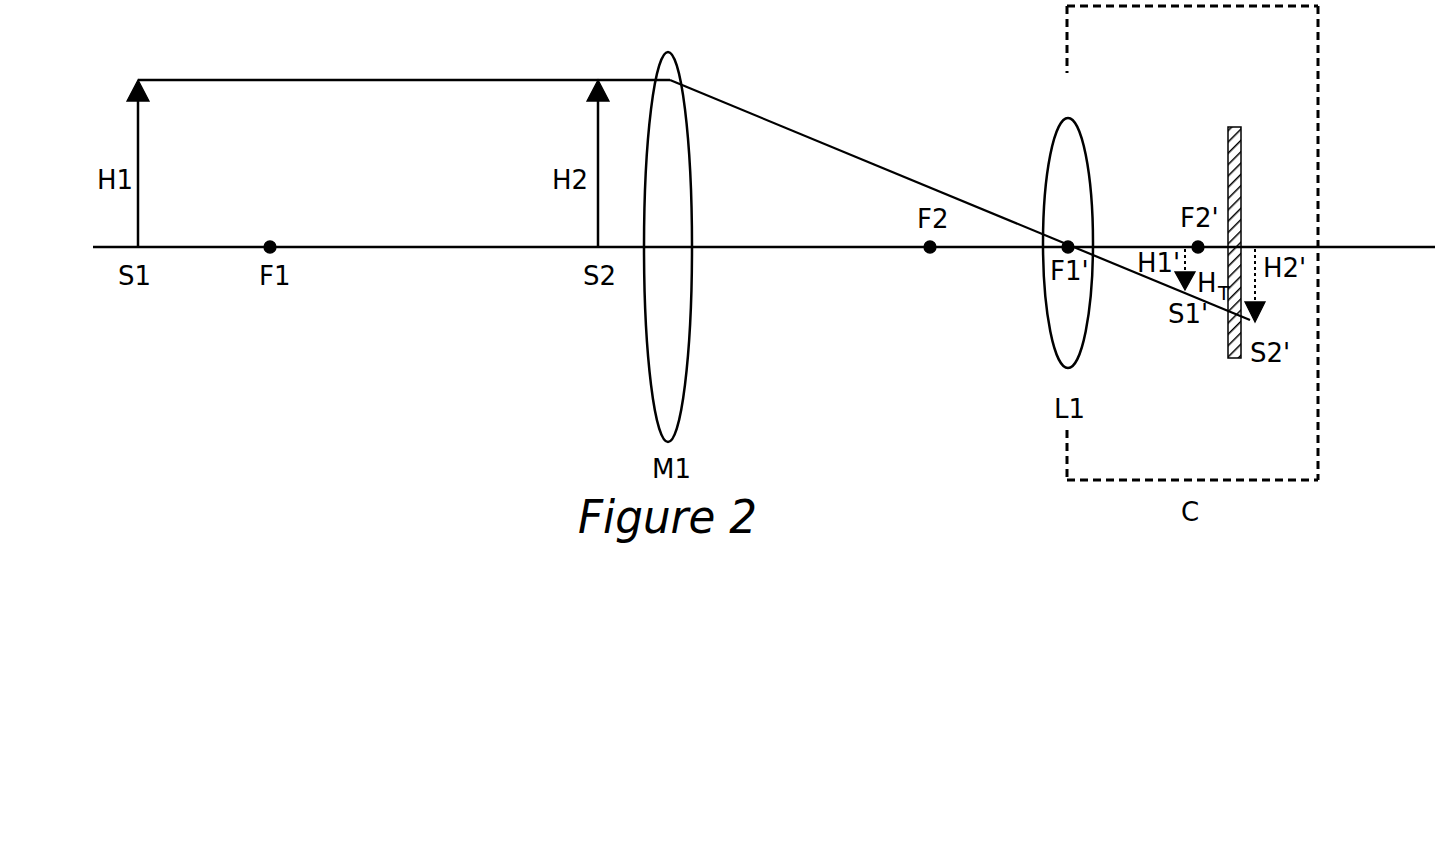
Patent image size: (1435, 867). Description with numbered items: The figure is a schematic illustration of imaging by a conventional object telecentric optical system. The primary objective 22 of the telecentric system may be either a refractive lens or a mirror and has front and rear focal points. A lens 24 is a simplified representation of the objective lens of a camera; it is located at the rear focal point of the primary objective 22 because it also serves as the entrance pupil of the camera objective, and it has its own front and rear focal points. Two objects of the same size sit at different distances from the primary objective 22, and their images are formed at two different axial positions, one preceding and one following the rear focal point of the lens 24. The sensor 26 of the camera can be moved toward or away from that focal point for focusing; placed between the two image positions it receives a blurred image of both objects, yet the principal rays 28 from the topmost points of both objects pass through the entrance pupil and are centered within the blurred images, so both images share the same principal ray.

The primary objective 22 is at (668, 232).
The lens 24 is at (1068, 226).
The sensor 26 is at (1232, 221).
The principal rays 28 is at (960, 200).